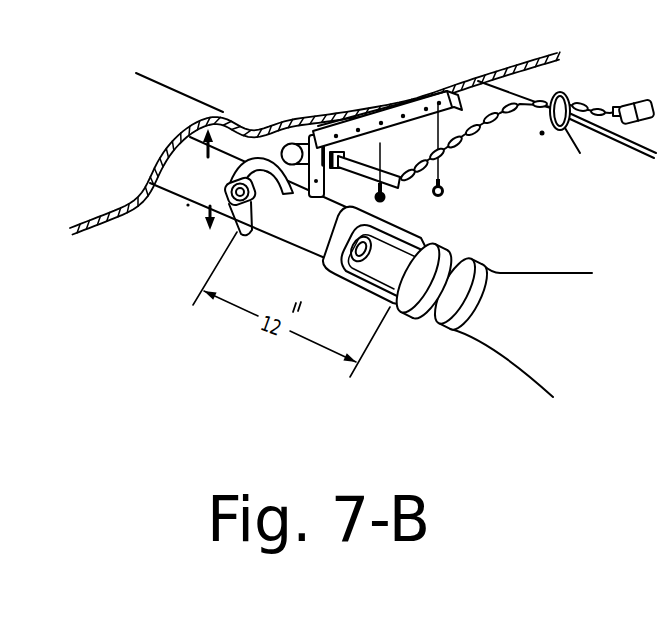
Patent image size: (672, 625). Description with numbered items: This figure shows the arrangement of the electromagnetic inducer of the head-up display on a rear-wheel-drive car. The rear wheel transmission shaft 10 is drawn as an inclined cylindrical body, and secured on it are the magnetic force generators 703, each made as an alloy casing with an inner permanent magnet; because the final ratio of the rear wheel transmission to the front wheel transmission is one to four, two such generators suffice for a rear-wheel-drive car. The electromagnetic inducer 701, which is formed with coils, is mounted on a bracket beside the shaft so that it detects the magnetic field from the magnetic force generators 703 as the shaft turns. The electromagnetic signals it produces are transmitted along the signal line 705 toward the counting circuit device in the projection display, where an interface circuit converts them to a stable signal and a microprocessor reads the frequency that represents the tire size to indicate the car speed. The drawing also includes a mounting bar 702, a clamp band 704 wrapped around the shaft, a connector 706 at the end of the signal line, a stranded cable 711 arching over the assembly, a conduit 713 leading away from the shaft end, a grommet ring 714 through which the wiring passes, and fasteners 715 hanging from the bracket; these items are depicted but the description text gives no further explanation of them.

The rear wheel transmission shaft 10 is at (187, 188).
The electromagnetic inducer 701 is at (298, 140).
The perforated mounting bar 702 is at (416, 97).
The magnetic force generator 703 is at (237, 236).
The clamp band 704 is at (211, 224).
The signal line 705 is at (478, 81).
The connector plug 706 is at (632, 102).
The stranded cable arch 711 is at (113, 114).
The hose / conduit 713 is at (504, 352).
The grommet ring 714 is at (570, 98).
The hanging bolts 715 is at (382, 201).